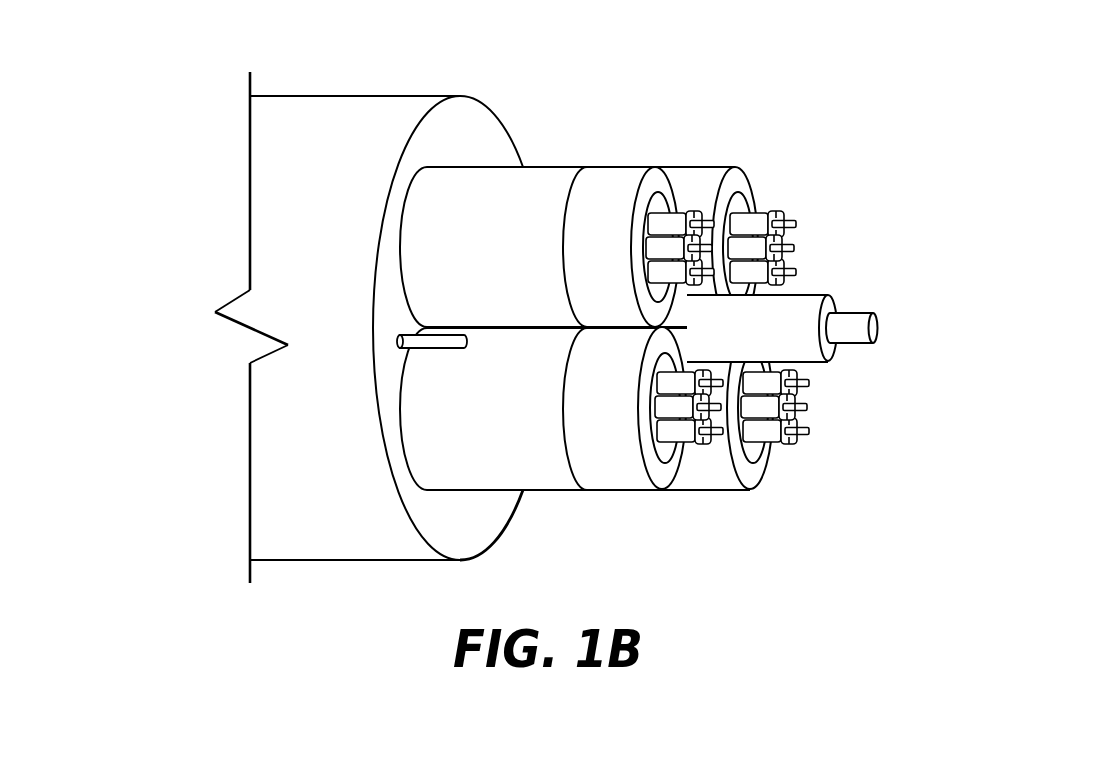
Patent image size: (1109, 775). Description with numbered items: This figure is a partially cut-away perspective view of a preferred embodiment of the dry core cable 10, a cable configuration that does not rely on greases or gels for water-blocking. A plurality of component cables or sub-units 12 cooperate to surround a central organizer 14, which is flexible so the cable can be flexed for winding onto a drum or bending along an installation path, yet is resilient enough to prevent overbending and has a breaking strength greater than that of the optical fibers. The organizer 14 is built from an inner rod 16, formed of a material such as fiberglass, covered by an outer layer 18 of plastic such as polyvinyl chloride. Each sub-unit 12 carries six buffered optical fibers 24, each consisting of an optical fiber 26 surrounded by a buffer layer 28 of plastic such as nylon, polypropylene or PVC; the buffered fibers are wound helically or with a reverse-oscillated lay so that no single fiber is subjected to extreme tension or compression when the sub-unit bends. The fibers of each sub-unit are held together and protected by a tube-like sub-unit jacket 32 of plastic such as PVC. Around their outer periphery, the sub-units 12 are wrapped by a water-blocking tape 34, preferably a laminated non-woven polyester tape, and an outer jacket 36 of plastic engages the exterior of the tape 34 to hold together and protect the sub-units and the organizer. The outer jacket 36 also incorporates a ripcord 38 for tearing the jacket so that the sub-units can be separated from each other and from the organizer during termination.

The dry core cable 10 is at (154, 125).
The sub-unit 12 is at (560, 133).
The organizer 14 is at (827, 270).
The inner rod 16 is at (880, 325).
The outer layer 18 is at (817, 353).
The buffered optical fiber 24 is at (762, 191).
The optical fiber 26 is at (808, 384).
The buffer layer 28 is at (798, 443).
The sub-unit jacket 32 is at (618, 455).
The water-blocking tape 34 is at (435, 403).
The outer jacket 36 is at (273, 260).
The ripcord 38 is at (397, 336).